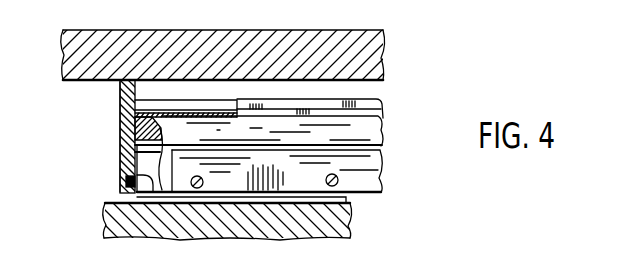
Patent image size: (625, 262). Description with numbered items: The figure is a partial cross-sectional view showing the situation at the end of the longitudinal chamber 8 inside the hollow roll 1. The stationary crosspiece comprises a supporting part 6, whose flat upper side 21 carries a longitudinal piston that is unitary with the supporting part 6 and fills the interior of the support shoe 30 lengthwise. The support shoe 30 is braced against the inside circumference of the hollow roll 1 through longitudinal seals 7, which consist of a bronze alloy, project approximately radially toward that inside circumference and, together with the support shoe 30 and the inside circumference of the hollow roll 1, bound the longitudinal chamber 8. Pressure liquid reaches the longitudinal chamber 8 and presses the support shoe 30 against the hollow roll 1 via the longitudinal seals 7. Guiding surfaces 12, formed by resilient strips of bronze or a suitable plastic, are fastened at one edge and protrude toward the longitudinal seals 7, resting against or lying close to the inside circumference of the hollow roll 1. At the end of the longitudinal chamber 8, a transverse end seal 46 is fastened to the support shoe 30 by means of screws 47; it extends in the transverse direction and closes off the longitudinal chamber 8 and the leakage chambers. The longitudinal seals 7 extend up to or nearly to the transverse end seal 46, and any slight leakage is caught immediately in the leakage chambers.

The hollow roll 1 is at (158, 58).
The longitudinal seals 7 is at (205, 108).
The longitudinal chamber 8 is at (338, 88).
The transverse end seal 46 is at (120, 100).
The screws 47 is at (112, 128).
The upper side of the supporting part 21 is at (126, 178).
The support shoe 30 is at (360, 133).
The guiding surfaces 12 is at (366, 176).
The supporting part 6 is at (328, 219).